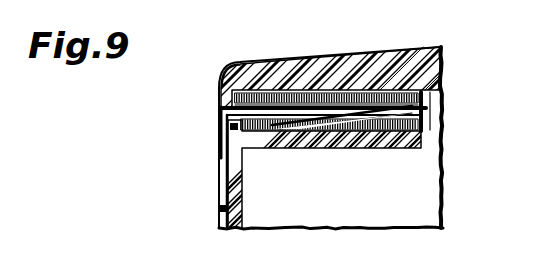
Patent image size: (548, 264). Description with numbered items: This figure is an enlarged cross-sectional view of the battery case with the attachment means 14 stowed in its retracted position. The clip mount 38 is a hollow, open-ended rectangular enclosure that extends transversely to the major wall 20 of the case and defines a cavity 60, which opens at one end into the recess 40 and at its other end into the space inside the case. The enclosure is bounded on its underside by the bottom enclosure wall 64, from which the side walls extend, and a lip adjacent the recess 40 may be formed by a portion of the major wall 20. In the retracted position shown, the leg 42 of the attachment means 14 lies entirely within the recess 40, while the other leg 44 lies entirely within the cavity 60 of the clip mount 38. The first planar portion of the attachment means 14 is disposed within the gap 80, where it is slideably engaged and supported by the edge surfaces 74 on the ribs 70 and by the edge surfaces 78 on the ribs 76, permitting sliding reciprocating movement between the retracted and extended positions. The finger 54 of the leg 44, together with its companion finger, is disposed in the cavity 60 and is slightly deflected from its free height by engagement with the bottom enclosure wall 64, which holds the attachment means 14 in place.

The attachment means 14 is at (219, 110).
The major wall 20 is at (235, 183).
The clip mount 38 is at (397, 148).
The recess 40 is at (223, 217).
The leg 42 is at (226, 159).
The leg 44 is at (244, 63).
The finger 54 is at (316, 148).
The cavity 60 is at (335, 86).
The bottom enclosure wall 64 is at (276, 148).
The ribs 70 is at (383, 87).
The edge surfaces 74 is at (420, 72).
The ribs 76 is at (365, 148).
The edge surfaces 78 is at (421, 133).
The gap 80 is at (303, 93).